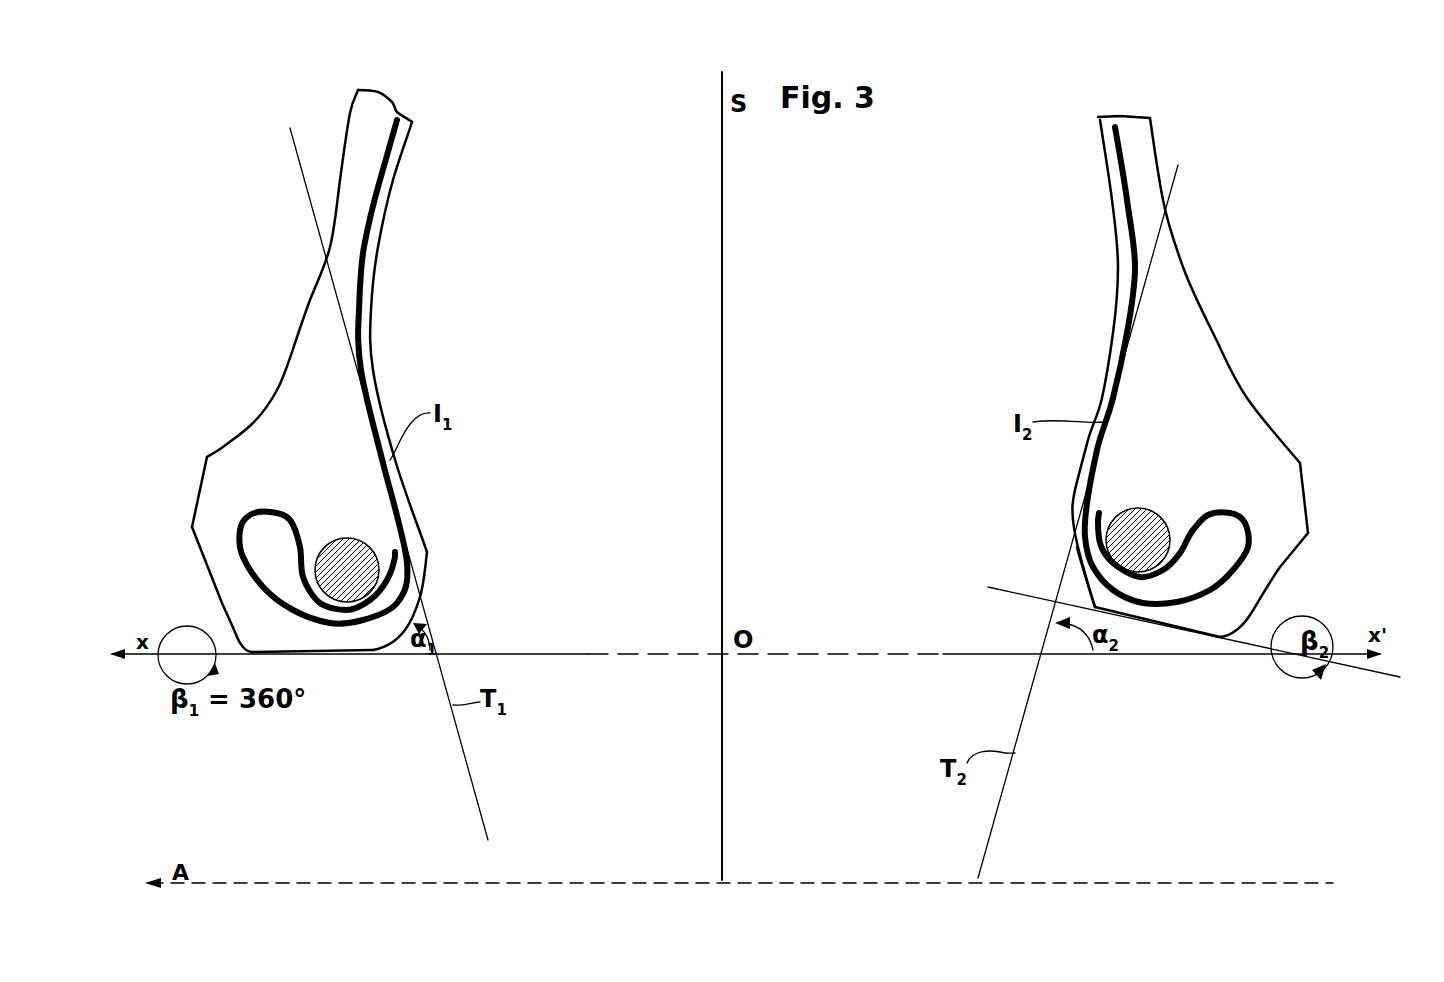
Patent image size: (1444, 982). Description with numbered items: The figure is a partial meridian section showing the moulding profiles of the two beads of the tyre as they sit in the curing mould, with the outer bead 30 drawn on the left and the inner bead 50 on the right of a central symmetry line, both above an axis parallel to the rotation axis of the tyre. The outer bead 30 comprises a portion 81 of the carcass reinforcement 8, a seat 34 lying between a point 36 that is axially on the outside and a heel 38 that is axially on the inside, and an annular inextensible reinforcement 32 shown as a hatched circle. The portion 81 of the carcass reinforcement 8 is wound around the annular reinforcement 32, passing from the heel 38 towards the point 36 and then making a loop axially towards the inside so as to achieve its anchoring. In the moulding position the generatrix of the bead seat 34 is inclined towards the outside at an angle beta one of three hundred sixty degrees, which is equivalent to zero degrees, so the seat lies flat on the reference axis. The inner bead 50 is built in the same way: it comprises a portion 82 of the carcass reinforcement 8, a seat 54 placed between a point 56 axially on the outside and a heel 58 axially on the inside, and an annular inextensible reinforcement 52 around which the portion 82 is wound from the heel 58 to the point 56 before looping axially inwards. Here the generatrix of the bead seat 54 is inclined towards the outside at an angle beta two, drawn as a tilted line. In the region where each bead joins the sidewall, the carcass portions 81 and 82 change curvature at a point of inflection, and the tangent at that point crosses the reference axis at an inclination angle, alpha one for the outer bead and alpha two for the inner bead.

The carcass reinforcement 8 is at (380, 167).
The outer bead 30 is at (402, 337).
The portion of the carcass reinforcement 81 is at (360, 300).
The annular inextensible reinforcement 32 is at (350, 563).
The seat 34 is at (347, 655).
The point 36 is at (240, 647).
The heel 38 is at (390, 650).
The inner bead 50 is at (1250, 370).
The portion of the carcass reinforcement 82 is at (1130, 280).
The annular inextensible reinforcement 52 is at (1143, 517).
The seat 54 is at (1158, 627).
The point 56 is at (1233, 633).
The heel 58 is at (1093, 607).